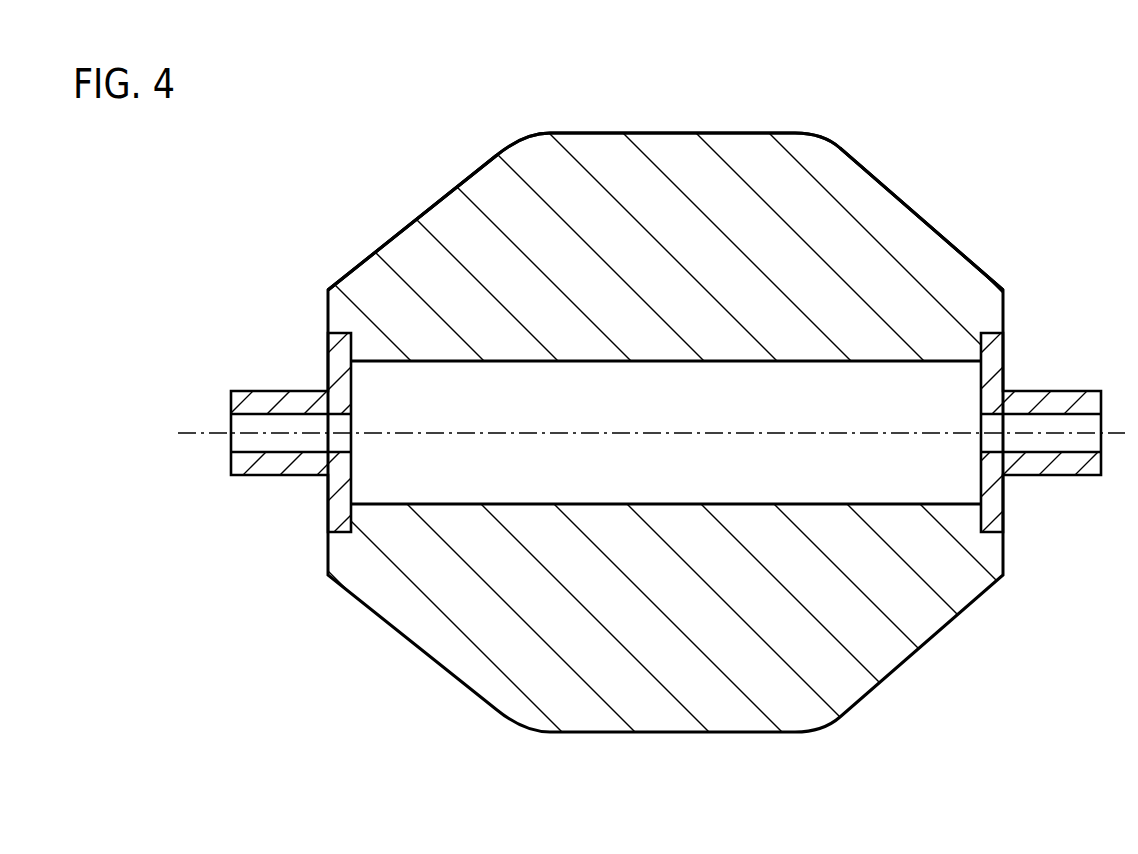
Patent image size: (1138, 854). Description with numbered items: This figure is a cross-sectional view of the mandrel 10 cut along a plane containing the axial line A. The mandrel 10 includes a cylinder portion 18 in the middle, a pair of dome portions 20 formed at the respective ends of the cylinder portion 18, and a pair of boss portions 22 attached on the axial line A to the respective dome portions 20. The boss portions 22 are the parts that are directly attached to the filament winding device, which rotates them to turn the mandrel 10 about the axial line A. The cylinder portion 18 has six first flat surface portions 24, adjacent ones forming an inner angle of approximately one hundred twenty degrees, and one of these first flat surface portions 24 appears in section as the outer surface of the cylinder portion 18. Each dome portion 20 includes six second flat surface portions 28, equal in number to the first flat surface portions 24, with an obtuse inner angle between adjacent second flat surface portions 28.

The mandrel 10 is at (136, 196).
The cylinder portion 18 is at (674, 131).
The dome portion 20 is at (426, 200).
The boss portion 22 is at (265, 390).
The first flat surface portion 24 is at (573, 133).
The second flat surface portion 28 is at (388, 237).